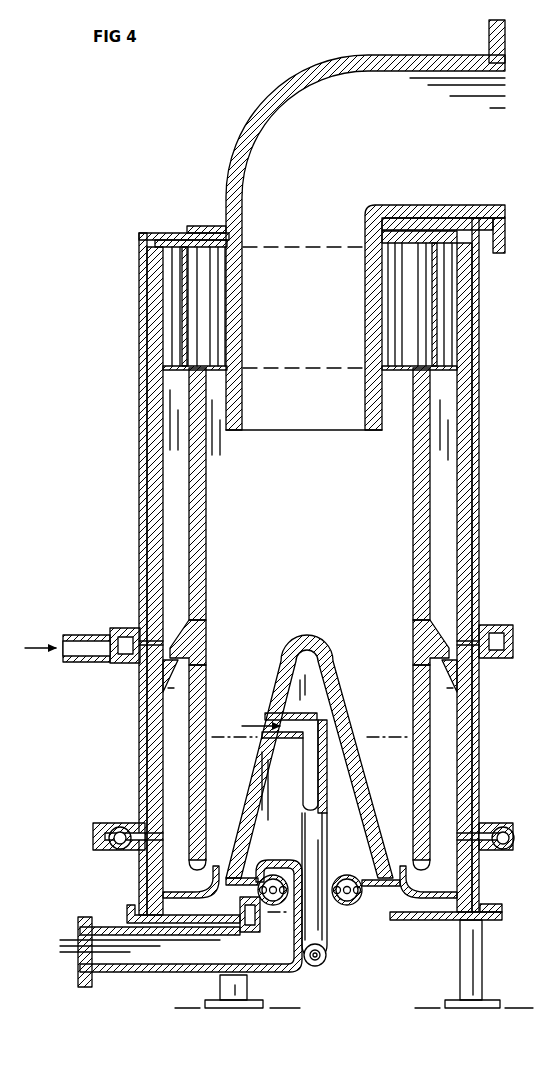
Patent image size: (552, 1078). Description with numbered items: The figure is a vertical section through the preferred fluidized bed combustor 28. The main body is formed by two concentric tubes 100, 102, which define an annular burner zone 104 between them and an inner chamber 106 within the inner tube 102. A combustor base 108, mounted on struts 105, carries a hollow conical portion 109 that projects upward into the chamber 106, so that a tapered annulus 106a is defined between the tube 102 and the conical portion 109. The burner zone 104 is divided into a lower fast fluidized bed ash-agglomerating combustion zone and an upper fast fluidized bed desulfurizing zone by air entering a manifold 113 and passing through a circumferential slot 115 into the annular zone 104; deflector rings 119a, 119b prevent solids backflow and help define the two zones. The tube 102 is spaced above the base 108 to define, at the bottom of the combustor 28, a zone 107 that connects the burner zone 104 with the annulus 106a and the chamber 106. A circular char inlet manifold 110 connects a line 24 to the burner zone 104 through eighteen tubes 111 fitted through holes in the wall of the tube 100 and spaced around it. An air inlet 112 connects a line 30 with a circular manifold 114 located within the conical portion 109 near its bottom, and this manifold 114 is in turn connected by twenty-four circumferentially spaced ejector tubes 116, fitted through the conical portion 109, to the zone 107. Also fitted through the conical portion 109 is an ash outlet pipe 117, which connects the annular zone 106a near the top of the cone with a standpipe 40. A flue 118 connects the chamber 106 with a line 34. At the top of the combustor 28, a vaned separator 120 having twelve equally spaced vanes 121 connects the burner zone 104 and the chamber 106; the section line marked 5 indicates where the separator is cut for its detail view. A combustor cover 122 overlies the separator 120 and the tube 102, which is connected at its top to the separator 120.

The combustor 28 is at (86, 133).
The flue 118 is at (338, 78).
The line 34 is at (548, 135).
The combustor cover 122 is at (175, 228).
The vaned separator 120 is at (176, 266).
The vanes 121 is at (185, 292).
The section line 5 is at (180, 306).
The tube 100 is at (146, 525).
The annular burner zone 104 is at (178, 588).
The tube 102 is at (203, 522).
The deflector ring 119a is at (172, 648).
The deflector ring 119b is at (165, 672).
The circumferential slot 115 is at (170, 645).
The manifold 113 is at (120, 628).
The inner chamber 106 is at (326, 576).
The tapered annulus 106a is at (262, 707).
The hollow conical portion 109 is at (356, 730).
The ash outlet pipe 117 is at (318, 715).
The standpipe 40 is at (320, 964).
The circular manifold 114 is at (352, 905).
The ejector tubes 116 is at (228, 825).
The zone 107 is at (190, 888).
The tubes 111 is at (136, 825).
The circular char inlet manifold 110 is at (119, 849).
The line 24 is at (90, 838).
The combustor base 108 is at (472, 918).
The struts 105 is at (237, 990).
The air inlet 112 is at (125, 975).
The line 30 is at (73, 952).